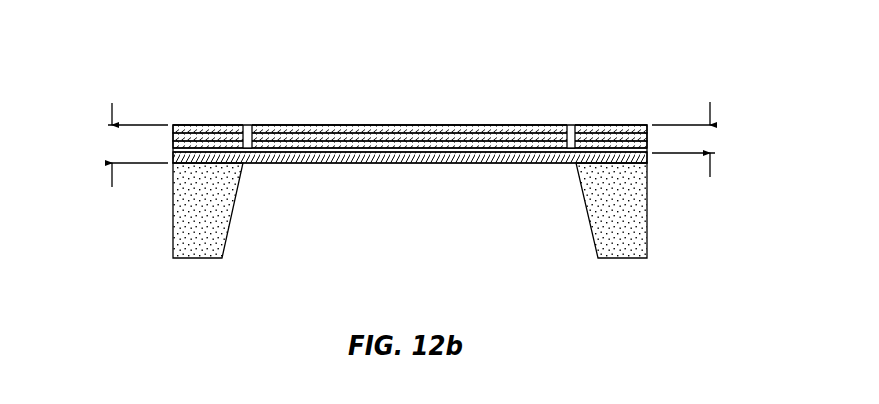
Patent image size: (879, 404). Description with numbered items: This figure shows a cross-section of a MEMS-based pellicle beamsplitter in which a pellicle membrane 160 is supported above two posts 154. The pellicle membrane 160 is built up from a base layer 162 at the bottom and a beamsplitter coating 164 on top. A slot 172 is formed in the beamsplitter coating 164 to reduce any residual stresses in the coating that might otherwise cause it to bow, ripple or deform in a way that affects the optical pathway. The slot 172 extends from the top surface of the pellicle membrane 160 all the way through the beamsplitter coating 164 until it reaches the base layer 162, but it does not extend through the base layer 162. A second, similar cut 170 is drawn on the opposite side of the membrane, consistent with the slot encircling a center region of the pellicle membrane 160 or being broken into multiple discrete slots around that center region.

The support posts 154 is at (582, 197).
The pellicle membrane 160 is at (113, 148).
The base layer 162 is at (647, 158).
The beamsplitter coating 164 is at (712, 140).
The trench / gap in upper stack 170 is at (580, 125).
The slot 172 is at (248, 125).